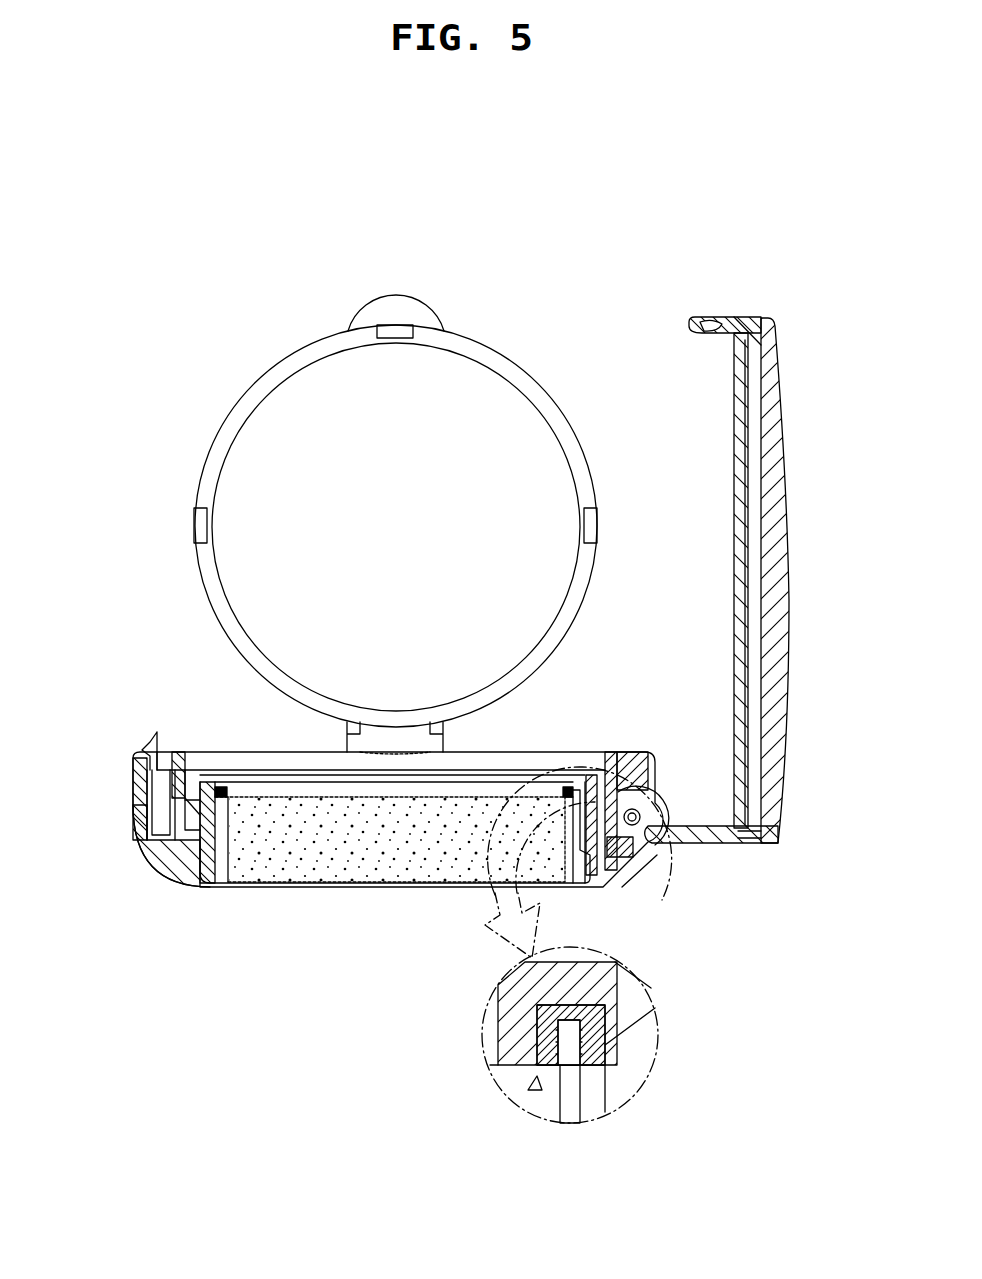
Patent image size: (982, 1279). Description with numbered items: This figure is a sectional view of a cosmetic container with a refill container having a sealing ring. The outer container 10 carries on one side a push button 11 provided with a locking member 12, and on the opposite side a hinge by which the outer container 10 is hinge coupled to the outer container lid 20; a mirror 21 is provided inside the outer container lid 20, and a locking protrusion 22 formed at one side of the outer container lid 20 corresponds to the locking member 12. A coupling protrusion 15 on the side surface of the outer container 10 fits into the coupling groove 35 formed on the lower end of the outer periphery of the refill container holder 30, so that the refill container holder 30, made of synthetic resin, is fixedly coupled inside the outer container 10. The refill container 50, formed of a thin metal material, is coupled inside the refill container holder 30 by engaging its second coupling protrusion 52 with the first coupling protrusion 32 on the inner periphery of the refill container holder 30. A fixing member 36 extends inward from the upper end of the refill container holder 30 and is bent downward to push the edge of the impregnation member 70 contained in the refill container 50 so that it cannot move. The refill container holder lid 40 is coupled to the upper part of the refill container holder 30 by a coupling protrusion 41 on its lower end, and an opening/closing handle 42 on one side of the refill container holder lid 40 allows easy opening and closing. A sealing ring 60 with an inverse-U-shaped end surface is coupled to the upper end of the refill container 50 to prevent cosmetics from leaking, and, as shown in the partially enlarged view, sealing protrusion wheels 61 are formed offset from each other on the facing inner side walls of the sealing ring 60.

The outer container 10 is at (183, 872).
The push button 11 is at (137, 795).
The locking member 12 is at (147, 742).
The coupling protrusion 15 is at (637, 860).
The outer container lid 20 is at (787, 530).
The mirror 21 is at (740, 403).
The locking protrusion 22 is at (720, 335).
The refill container holder 30 is at (202, 843).
The first coupling protrusion 32 is at (197, 877).
The coupling groove 35 is at (612, 800).
The fixing member 36 is at (230, 782).
The refill container holder lid 40 is at (272, 375).
The coupling protrusion 41 is at (198, 525).
The opening/closing handle 42 is at (400, 302).
The refill container 50 is at (268, 890).
The second coupling protrusion 52 is at (237, 883).
The sealing ring 60 is at (600, 1006).
The sealing protrusion wheels 61 is at (586, 1060).
The impregnation member 70 is at (310, 880).